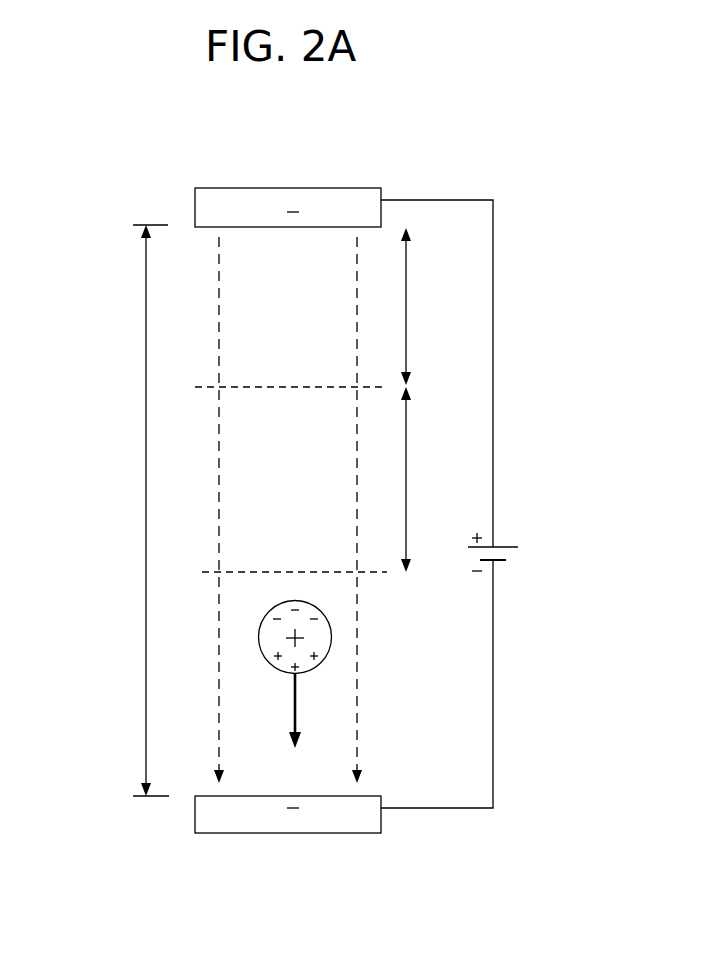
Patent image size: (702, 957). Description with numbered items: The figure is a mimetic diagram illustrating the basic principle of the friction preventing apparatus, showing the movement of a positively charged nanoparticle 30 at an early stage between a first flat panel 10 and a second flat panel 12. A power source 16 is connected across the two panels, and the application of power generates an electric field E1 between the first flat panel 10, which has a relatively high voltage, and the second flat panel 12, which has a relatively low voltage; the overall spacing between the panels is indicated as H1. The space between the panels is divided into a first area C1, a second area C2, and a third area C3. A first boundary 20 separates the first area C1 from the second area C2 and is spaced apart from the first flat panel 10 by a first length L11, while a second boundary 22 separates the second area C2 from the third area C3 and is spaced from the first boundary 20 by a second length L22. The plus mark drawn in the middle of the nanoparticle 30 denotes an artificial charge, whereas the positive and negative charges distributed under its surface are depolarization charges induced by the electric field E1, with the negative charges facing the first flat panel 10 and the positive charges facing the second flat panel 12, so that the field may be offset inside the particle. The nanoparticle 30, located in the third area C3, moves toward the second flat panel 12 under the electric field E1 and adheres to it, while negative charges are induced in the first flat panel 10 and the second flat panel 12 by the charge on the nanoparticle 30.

The first flat panel 10 is at (232, 200).
The second flat panel 12 is at (303, 823).
The power source 16 is at (522, 529).
The first boundary 20 is at (245, 387).
The second boundary 22 is at (250, 572).
The nanoparticle 30 is at (320, 608).
The electric field E1 is at (220, 300).
The electrode gap height H1 is at (134, 510).
The first length L11 is at (431, 306).
The second length L22 is at (431, 479).
The first area C1 is at (306, 314).
The second area C2 is at (307, 525).
The third area C3 is at (270, 724).